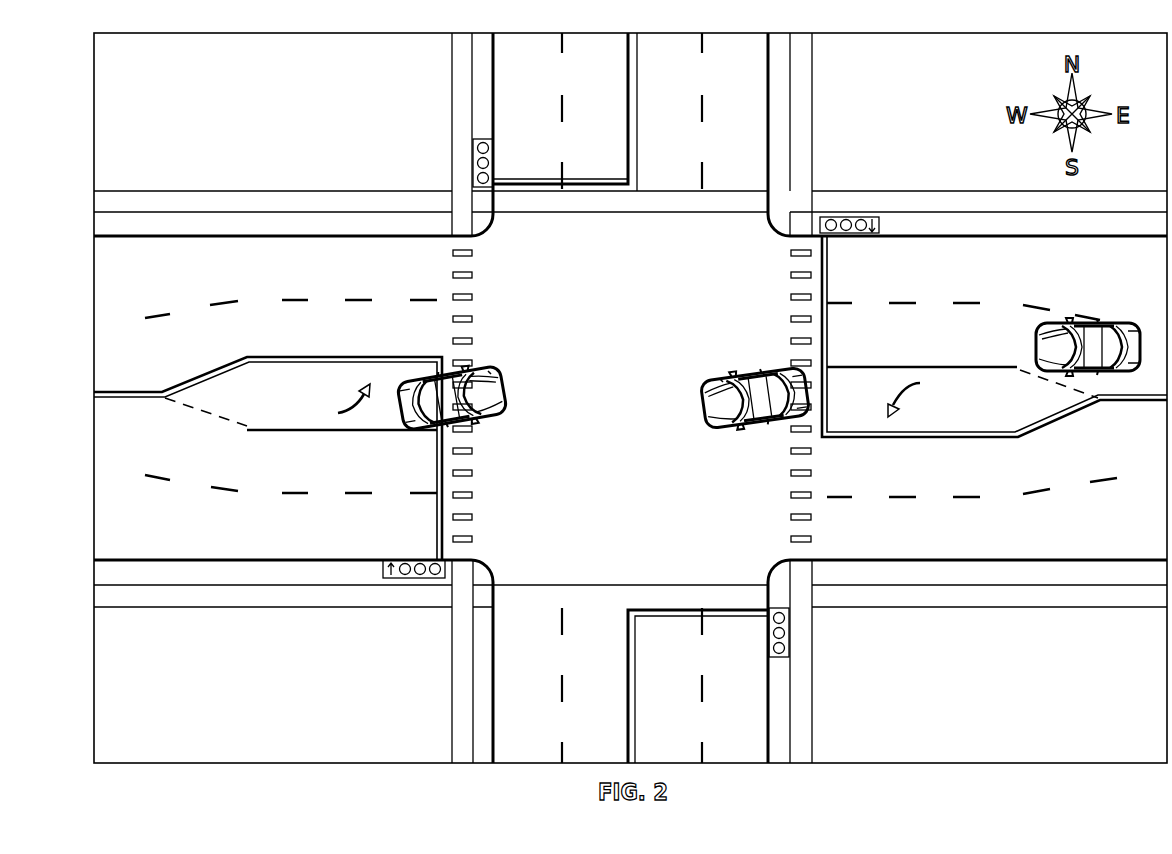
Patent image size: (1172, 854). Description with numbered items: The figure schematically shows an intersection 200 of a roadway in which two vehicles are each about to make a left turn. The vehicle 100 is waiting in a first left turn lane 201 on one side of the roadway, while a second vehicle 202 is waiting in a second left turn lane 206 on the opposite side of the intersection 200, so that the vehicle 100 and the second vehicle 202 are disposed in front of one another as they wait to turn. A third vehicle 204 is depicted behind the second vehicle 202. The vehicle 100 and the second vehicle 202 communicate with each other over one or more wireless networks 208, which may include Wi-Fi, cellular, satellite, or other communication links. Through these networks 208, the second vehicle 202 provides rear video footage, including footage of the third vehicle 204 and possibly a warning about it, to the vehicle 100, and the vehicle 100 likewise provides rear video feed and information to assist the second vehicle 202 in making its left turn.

The vehicle 100 is at (490, 412).
The intersection 200 is at (876, 94).
The first left turn lane 201 is at (205, 400).
The second vehicle 202 is at (752, 415).
The third vehicle 204 is at (1132, 330).
The second left turn lane 206 is at (868, 378).
The wireless networks 208 is at (490, 372).